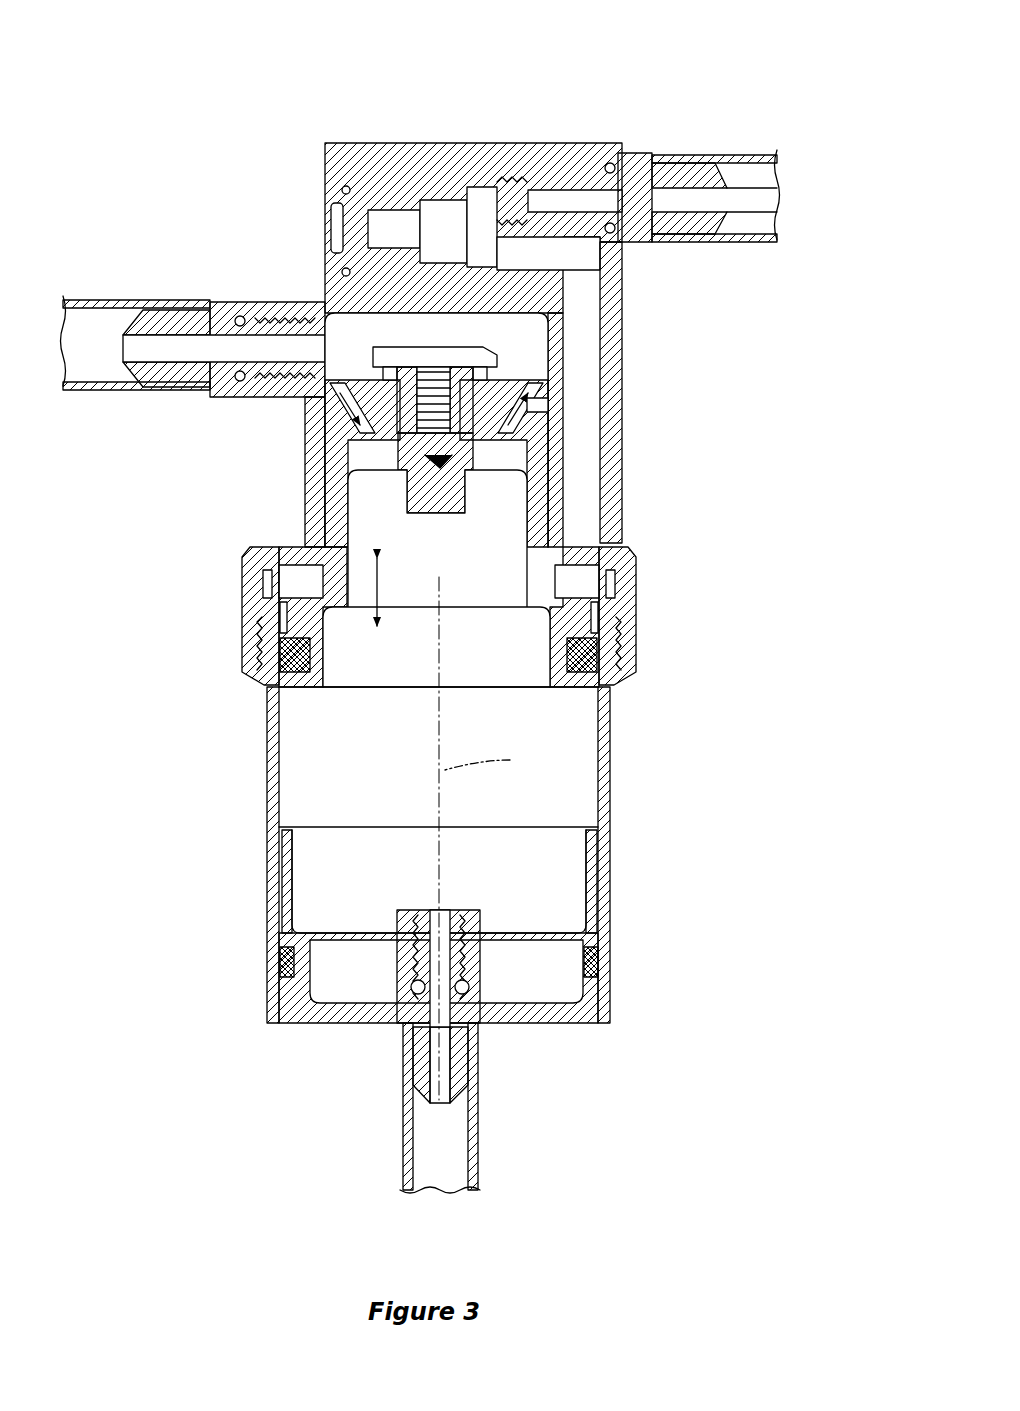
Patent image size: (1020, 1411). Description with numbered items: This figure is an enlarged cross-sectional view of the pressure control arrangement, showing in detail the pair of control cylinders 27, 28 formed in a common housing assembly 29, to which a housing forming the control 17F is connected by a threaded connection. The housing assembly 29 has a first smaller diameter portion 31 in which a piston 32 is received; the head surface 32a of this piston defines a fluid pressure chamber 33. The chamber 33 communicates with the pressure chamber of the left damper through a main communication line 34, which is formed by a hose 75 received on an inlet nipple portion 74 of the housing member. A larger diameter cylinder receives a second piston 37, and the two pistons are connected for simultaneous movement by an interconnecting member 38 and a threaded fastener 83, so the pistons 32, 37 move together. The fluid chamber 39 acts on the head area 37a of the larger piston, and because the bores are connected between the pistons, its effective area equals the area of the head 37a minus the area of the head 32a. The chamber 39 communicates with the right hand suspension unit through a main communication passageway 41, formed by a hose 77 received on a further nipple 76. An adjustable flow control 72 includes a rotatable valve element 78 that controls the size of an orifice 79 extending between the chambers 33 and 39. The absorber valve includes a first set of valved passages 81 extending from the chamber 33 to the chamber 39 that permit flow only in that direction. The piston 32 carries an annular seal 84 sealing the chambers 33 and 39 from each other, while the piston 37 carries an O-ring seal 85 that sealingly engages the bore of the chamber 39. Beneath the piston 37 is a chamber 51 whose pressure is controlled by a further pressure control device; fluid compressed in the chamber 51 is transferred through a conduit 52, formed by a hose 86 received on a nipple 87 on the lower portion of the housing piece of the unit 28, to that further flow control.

The control 17F is at (630, 74).
The adjustable valve or orifice 72 is at (410, 195).
The rotatable valve element 78 is at (327, 192).
The orifice 79 is at (446, 266).
The nipple 76 is at (630, 146).
The hose 77 is at (732, 153).
The main communication passageway 41 is at (758, 194).
The hose 75 is at (92, 298).
The inlet nipple portion 74 is at (312, 296).
The annular seal 84 is at (306, 412).
The main communication line 34 is at (95, 366).
The fluid chamber 39 is at (337, 450).
The first smaller diameter portion 31 is at (552, 322).
The control cylinder 27 is at (625, 338).
The fluid pressure chamber 33 is at (363, 348).
The piston 32 is at (548, 420).
The head surface 32a is at (548, 388).
The conduit 52 is at (548, 405).
The first set of valved passages 81 is at (385, 395).
The threaded fastener 83 is at (430, 423).
The interconnecting member 38 is at (460, 425).
The piston 37 is at (585, 612).
The head area 37a is at (263, 585).
The O-ring seal 85 is at (592, 660).
The control cylinder 28 is at (614, 741).
The housing assembly 29 is at (262, 805).
The chamber 51 is at (340, 872).
The nipple 87 is at (405, 1072).
The hose 86 is at (478, 1105).